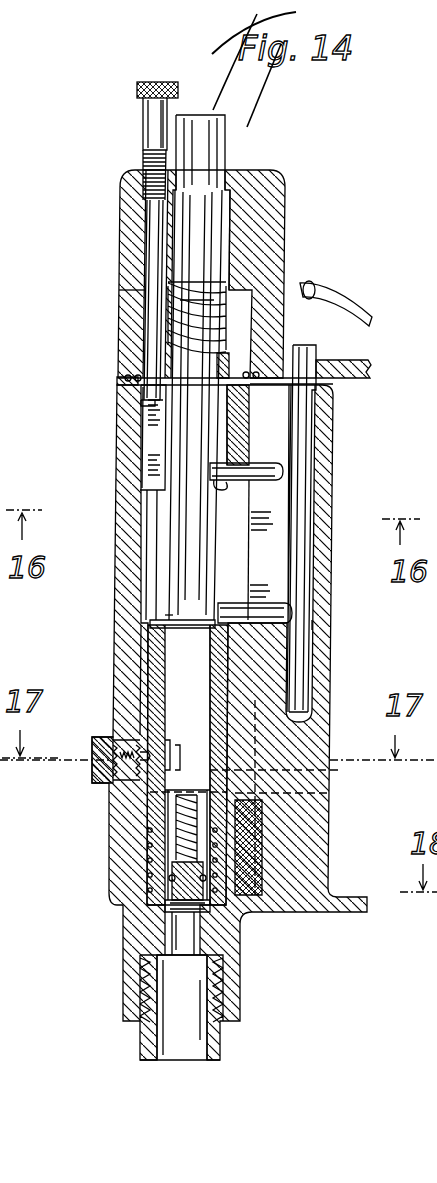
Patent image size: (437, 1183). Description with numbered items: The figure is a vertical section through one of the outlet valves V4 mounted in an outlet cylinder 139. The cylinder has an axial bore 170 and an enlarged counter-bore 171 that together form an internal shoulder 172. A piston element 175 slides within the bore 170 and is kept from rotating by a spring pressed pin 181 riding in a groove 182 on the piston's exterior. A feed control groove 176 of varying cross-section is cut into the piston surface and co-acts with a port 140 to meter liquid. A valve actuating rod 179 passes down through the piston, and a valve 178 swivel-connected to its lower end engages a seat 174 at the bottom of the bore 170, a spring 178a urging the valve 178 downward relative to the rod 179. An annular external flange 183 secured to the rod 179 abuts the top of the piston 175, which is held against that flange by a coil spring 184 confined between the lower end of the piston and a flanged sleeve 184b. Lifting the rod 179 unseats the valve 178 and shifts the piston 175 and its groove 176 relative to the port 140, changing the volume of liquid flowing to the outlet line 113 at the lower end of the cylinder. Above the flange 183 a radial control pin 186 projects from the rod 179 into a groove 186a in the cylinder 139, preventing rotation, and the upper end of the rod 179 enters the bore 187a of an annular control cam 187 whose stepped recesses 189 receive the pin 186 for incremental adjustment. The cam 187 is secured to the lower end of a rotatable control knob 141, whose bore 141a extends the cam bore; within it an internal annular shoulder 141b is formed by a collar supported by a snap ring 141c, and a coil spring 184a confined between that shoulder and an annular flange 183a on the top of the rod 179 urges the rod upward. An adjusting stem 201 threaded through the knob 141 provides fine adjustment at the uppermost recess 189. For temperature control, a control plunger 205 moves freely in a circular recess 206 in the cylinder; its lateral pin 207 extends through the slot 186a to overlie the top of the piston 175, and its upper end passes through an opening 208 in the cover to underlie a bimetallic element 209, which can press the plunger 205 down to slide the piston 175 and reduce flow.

The outlet line 113 is at (147, 1040).
The outlet cylinder 139 is at (116, 452).
The port 140 is at (261, 687).
The rotatable control knob 141 is at (268, 224).
The bore of the control knob 141a is at (224, 212).
The internal annular shoulder 141b is at (166, 373).
The snap ring 141c is at (232, 375).
The axial bore 170 is at (226, 648).
The counter-bore 171 is at (146, 512).
The internal shoulder 172 is at (150, 622).
The valve seat 174 is at (170, 935).
The piston element 175 is at (216, 673).
The feed control groove 176 is at (236, 800).
The valve 178 is at (176, 902).
The spring 178a is at (187, 822).
The valve actuating rod 179 is at (196, 506).
The spring pressed pin 181 is at (160, 758).
The groove 182 is at (150, 805).
The annular external flange 183 is at (165, 614).
The annular flange 183a is at (200, 283).
The coil spring 184 is at (148, 846).
The coil spring 184a is at (212, 300).
The flanged sleeve 184b is at (212, 915).
The radial control pin 186 is at (270, 466).
The groove 186a is at (272, 544).
The annular control cam 187 is at (236, 428).
The bore of the control cam 187a is at (232, 402).
The stepped recesses 189 is at (226, 489).
The adjusting stem 201 is at (142, 124).
The control plunger 205 is at (314, 500).
The circular recess 206 is at (314, 622).
The lateral pin 207 is at (272, 610).
The opening 208 is at (340, 366).
The bimetallic element 209 is at (348, 302).
The outlet valve V4 is at (130, 692).